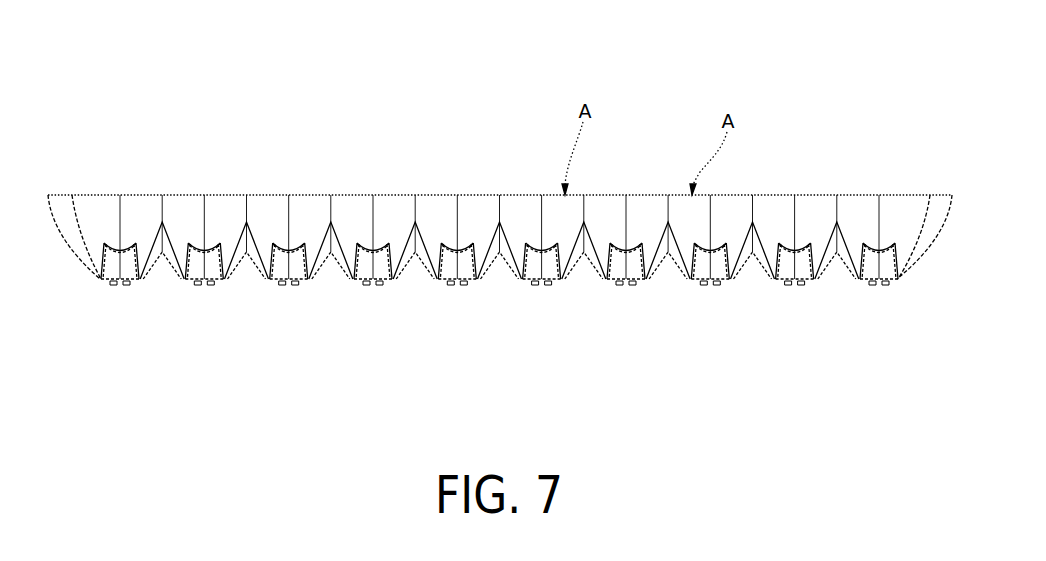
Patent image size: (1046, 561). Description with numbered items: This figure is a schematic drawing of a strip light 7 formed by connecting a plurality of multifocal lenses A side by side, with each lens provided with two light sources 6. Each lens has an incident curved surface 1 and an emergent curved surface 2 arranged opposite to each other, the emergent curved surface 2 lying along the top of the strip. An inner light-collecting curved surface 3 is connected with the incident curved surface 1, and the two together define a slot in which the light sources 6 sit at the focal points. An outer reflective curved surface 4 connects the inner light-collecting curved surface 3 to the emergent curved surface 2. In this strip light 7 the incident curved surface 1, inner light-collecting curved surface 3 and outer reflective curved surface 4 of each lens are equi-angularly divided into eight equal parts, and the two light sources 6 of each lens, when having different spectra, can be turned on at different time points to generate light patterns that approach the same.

The incident curved surface 1 is at (556, 258).
The emergent curved surface 2 is at (528, 193).
The inner light-collecting curved surface 3 is at (524, 264).
The outer reflective curved surface 4 is at (505, 272).
The light source 6 is at (549, 287).
The strip light 7 is at (500, 191).